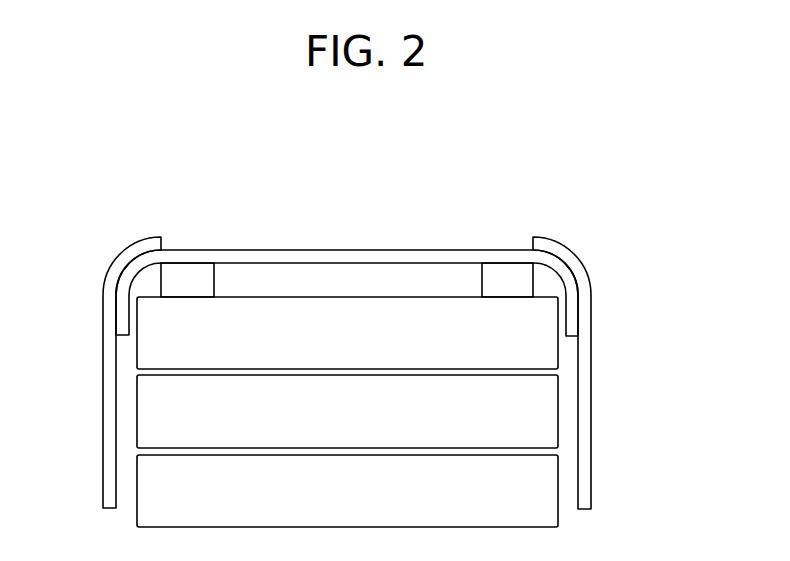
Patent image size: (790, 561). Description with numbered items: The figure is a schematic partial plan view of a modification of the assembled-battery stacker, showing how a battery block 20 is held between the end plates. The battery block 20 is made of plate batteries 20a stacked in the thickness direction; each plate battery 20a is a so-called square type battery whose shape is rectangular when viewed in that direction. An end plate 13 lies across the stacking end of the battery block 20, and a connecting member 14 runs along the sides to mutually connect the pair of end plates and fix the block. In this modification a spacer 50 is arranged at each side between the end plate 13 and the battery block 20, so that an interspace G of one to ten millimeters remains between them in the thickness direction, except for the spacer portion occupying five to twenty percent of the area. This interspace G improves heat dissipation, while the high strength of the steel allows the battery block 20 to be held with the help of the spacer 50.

The connecting member 14 is at (108, 270).
The end plate 13 is at (298, 250).
The interspace G is at (397, 282).
The spacer 50 is at (181, 275).
The battery block 20 is at (437, 412).
The plate battery 20a is at (558, 350).